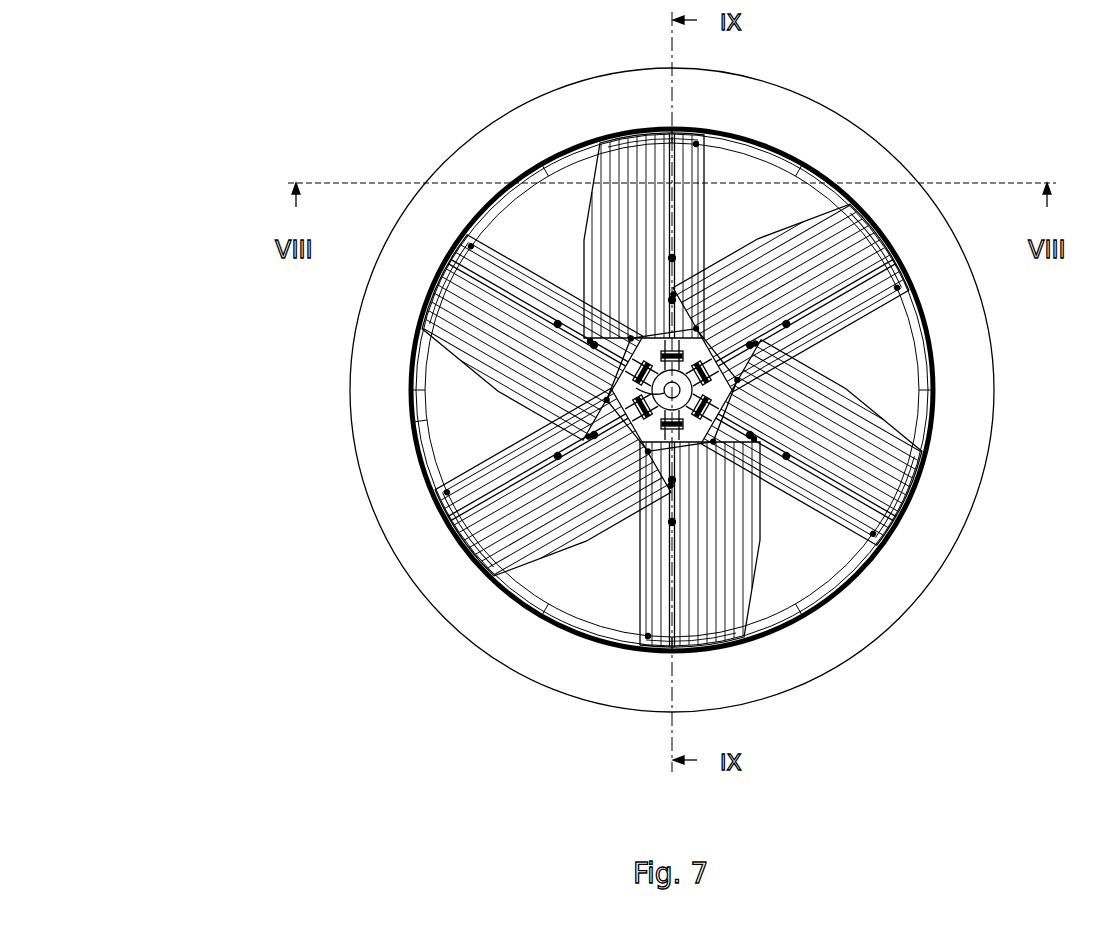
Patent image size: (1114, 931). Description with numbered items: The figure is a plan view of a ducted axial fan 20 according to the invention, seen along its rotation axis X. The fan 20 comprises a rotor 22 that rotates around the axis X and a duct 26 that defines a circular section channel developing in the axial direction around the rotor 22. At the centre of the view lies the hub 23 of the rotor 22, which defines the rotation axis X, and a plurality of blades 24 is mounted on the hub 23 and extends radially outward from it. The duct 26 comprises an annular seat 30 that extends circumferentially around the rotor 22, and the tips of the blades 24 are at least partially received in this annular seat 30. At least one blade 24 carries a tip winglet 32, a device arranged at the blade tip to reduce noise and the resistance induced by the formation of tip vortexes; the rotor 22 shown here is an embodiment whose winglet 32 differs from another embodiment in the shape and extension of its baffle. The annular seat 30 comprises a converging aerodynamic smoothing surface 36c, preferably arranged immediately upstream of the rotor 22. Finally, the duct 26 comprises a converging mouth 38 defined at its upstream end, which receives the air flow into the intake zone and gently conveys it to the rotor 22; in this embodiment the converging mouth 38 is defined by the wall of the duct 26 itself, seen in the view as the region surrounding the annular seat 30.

The ducted axial fan 20 is at (121, 213).
The rotor 22 is at (762, 567).
The hub 23 is at (742, 393).
The blade 24 is at (480, 342).
The duct 26 is at (937, 372).
The annular seat 30 is at (408, 425).
The tip winglet 32 is at (908, 508).
The converging aerodynamic smoothing surface 36c is at (607, 632).
The converging mouth 38 is at (468, 600).